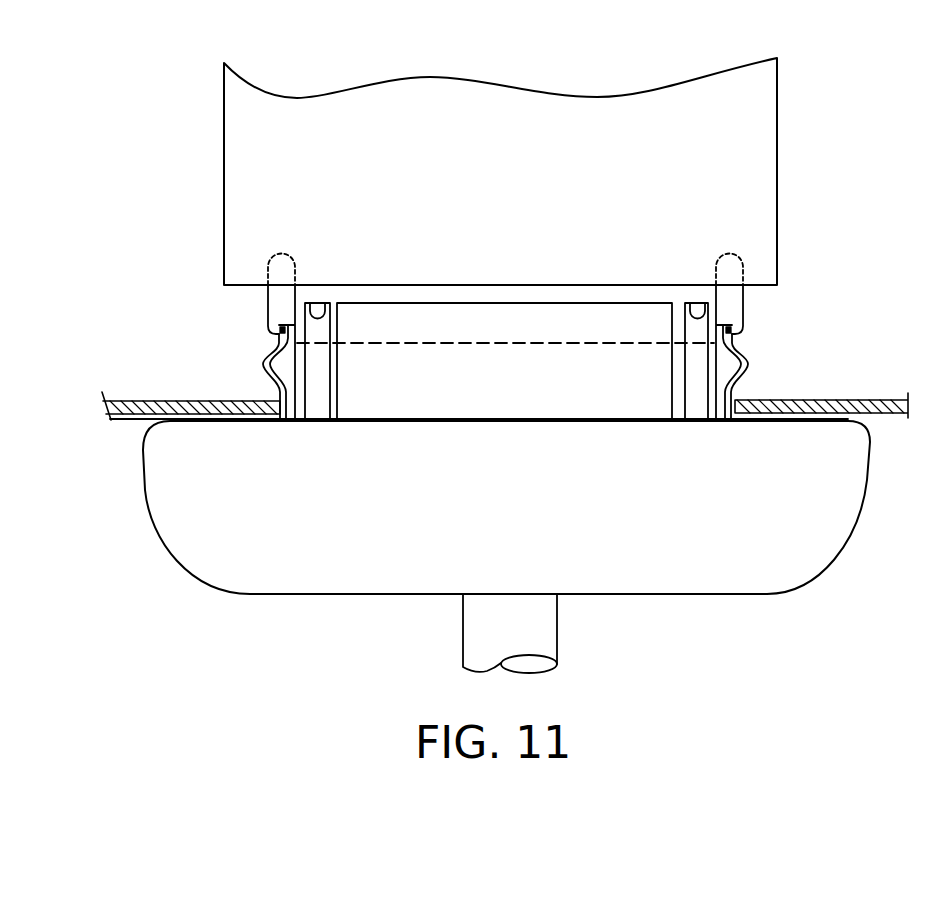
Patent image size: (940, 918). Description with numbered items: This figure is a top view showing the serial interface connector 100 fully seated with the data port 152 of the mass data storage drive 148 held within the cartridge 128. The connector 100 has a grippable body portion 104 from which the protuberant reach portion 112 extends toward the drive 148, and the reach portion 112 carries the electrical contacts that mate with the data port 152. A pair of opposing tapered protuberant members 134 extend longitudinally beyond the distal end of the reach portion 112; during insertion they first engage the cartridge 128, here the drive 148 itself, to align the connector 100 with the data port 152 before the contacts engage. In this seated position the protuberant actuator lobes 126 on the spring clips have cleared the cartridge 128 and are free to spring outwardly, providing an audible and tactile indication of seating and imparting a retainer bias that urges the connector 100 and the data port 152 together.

The serial interface connector 100 is at (262, 620).
The body portion 104 is at (813, 503).
The reach portion 112 is at (682, 405).
The protuberant actuator lobe 126 is at (752, 357).
The cartridge 128 is at (220, 400).
The tapered protuberant member 134 is at (745, 262).
The mass data storage drive 148 is at (224, 133).
The data port 152 is at (470, 325).